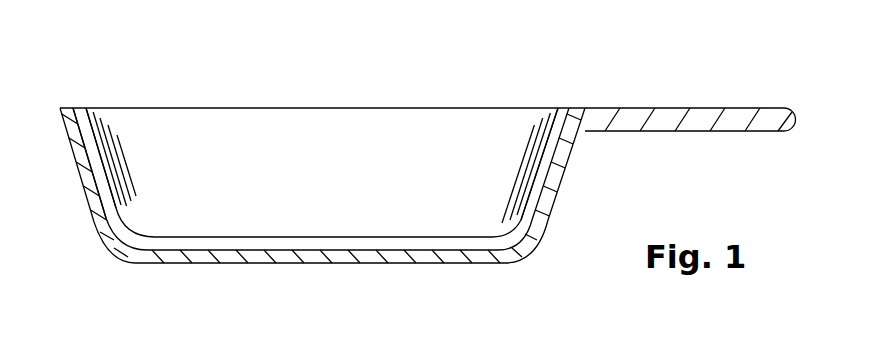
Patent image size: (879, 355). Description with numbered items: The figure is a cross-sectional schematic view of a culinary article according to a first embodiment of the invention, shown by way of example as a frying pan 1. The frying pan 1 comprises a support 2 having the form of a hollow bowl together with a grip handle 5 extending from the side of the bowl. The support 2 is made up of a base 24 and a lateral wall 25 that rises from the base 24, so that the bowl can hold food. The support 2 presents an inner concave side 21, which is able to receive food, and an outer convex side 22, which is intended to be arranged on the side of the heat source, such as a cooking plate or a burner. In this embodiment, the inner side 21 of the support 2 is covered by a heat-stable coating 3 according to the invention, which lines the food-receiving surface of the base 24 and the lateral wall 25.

The frying pan 1 is at (419, 175).
The support 2 is at (94, 180).
The inner concave side 21 is at (82, 128).
The outer convex side 22 is at (98, 230).
The base 24 is at (292, 265).
The lateral wall 25 is at (574, 178).
The heat-stable coating 3 is at (585, 154).
The grip handle 5 is at (663, 118).